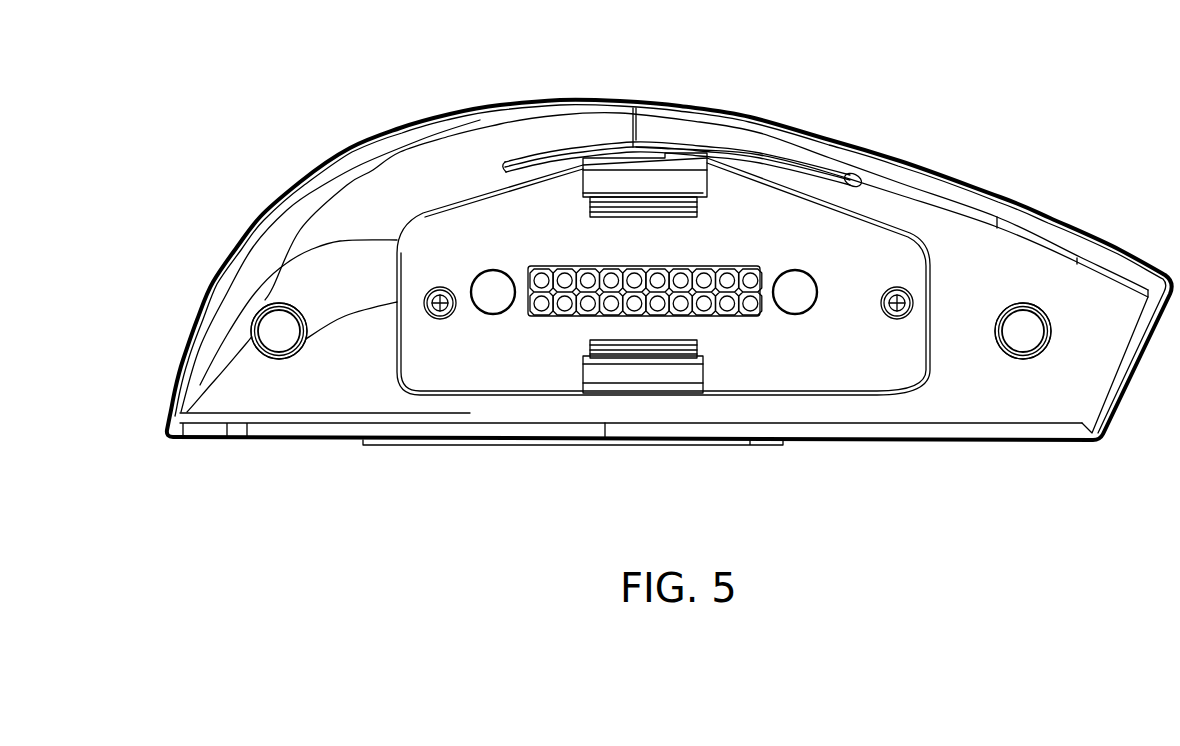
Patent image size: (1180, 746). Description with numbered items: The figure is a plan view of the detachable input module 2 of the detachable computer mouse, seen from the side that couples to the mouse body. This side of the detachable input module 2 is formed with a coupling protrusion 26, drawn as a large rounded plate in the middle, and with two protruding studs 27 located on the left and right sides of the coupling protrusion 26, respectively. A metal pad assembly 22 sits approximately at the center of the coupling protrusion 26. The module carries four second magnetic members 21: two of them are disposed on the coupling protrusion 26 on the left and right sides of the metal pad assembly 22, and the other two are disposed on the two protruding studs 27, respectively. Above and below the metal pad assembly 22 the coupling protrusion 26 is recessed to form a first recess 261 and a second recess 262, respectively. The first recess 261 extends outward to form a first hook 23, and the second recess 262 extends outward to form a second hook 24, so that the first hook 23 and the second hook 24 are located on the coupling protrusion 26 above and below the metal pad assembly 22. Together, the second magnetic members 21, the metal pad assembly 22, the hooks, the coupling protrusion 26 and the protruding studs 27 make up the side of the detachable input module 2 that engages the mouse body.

The detachable input module 2 is at (734, 91).
The second magnetic members 21 is at (278, 338).
The metal pad assembly 22 is at (562, 314).
The first hook 23 is at (672, 204).
The second hook 24 is at (638, 357).
The coupling protrusion 26 is at (842, 394).
The first recess 261 is at (625, 182).
The second recess 262 is at (683, 372).
The protruding studs 27 is at (280, 303).